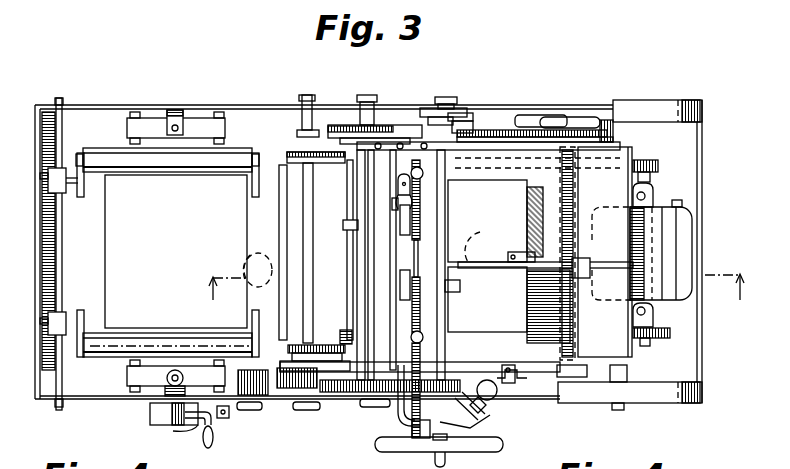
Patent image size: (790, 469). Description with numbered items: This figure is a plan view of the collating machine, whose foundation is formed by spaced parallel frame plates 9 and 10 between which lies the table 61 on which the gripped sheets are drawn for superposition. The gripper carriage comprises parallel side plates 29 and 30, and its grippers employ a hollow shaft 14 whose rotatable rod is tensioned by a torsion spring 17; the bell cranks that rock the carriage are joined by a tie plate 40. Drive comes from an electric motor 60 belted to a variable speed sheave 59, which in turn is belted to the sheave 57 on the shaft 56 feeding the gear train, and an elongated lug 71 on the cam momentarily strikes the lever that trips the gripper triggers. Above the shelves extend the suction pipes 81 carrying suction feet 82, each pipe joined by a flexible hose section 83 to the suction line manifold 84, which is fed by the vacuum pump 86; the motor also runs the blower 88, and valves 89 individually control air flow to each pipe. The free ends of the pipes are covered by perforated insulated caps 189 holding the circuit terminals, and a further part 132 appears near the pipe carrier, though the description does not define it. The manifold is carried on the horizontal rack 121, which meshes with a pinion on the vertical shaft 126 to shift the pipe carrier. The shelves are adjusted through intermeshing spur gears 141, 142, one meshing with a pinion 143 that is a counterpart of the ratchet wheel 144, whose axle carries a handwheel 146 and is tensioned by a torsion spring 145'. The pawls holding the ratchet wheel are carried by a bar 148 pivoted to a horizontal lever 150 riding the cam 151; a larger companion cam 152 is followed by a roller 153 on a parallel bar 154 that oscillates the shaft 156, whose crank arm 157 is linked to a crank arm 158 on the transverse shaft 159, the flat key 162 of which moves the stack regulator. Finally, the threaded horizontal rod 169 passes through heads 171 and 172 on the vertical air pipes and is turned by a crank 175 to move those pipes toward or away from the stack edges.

The frame plate 9 is at (102, 401).
The frame plate 10 is at (123, 105).
The hollow shaft 14 is at (352, 248).
The torsion spring 17 is at (346, 333).
The carriage side plate 29 is at (277, 385).
The carriage side plate 30 is at (293, 145).
The tie plate 40 is at (472, 300).
The shaft 56 is at (513, 168).
The sheave 57 is at (485, 176).
The variable speed sheave 59 is at (655, 168).
The electric motor 60 is at (672, 210).
The table 61 is at (168, 251).
The elongated lug 71 is at (355, 123).
The suction pipe 81 is at (392, 247).
The suction foot 82 is at (403, 226).
The flexible hose section 83 is at (404, 418).
The suction line manifold 84 is at (498, 395).
The vacuum pump 86 is at (481, 240).
The blower 88 is at (268, 254).
The valve 89 is at (490, 415).
The horizontal rack 121 is at (532, 373).
The vertical shaft 126 is at (512, 378).
The stop 132 is at (393, 201).
The spur gear 141 is at (515, 130).
The spur gear 142 is at (484, 130).
The pinion 143 is at (577, 120).
The ratchet wheel 144 is at (563, 114).
The torsion spring 145' is at (556, 253).
The handwheel 146 is at (545, 115).
The bar 148 is at (522, 103).
The horizontal lever 150 is at (505, 115).
The cam 151 is at (428, 122).
The companion cam 152 is at (430, 113).
The roller 153 is at (470, 110).
The bar 154 is at (460, 108).
The shaft 156 is at (448, 185).
The crank arm 157 is at (466, 280).
The crank arm 158 is at (467, 262).
The transverse shaft 159 is at (503, 266).
The flat key 162 is at (508, 253).
The horizontal rod 169 is at (422, 239).
The head 171 is at (424, 173).
The head 172 is at (438, 315).
The crank 175 is at (435, 465).
The perforated insulated cap 189 is at (398, 182).